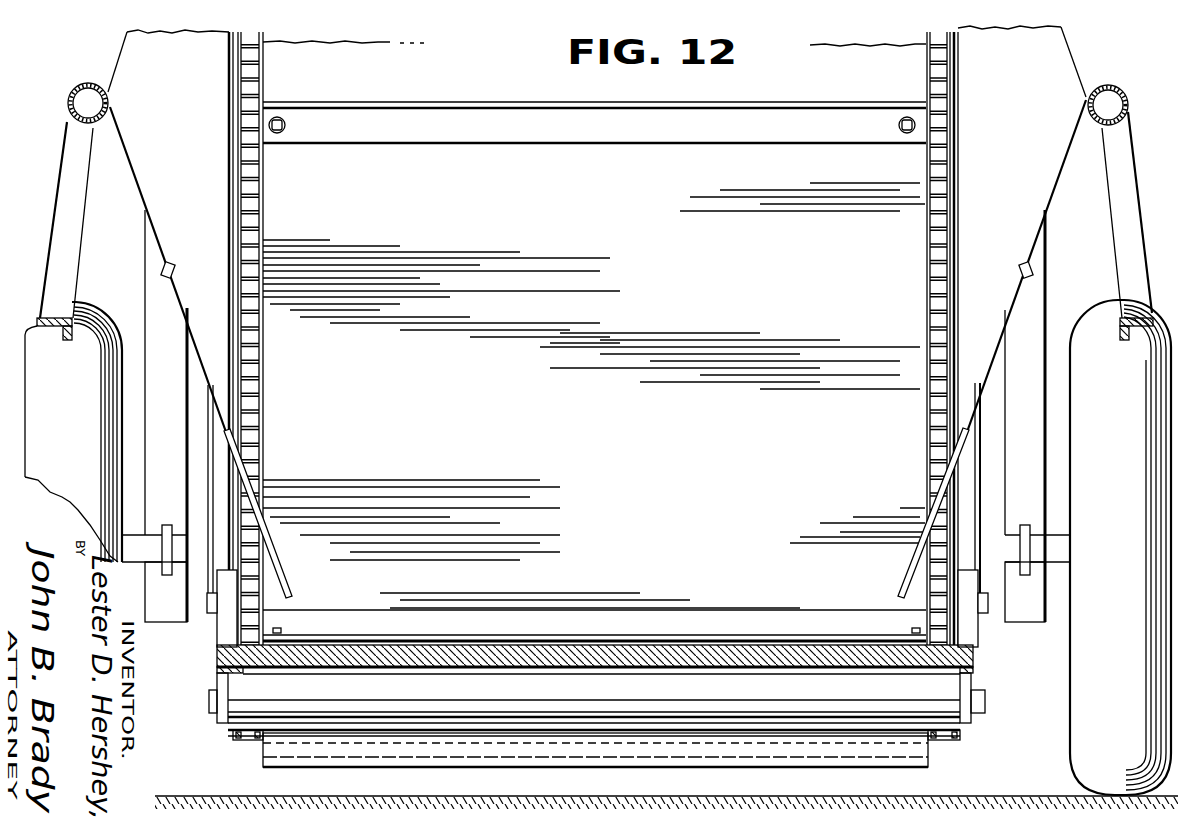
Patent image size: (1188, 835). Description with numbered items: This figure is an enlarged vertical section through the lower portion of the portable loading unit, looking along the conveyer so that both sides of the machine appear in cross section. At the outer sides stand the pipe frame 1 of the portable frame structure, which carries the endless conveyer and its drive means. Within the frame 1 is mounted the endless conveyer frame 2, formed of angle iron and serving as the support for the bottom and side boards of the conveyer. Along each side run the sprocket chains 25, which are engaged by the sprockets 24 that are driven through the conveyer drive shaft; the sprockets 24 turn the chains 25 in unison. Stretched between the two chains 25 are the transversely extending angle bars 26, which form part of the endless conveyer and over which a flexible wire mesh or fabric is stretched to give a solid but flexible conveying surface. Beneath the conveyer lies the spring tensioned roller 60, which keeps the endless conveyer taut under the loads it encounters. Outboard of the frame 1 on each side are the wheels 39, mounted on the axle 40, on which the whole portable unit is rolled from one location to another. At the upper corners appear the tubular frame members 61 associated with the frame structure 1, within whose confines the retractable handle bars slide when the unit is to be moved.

The frame 1 is at (150, 267).
The endless conveyer frame 2 is at (982, 457).
The sprockets 24 is at (265, 592).
The sprocket chains 25 is at (258, 383).
The transversely extending angle bars 26 is at (378, 144).
The wheels 39 is at (70, 432).
The axle 40 is at (131, 543).
The spring tensioned roller 60 is at (477, 733).
The frame member 61 is at (67, 105).